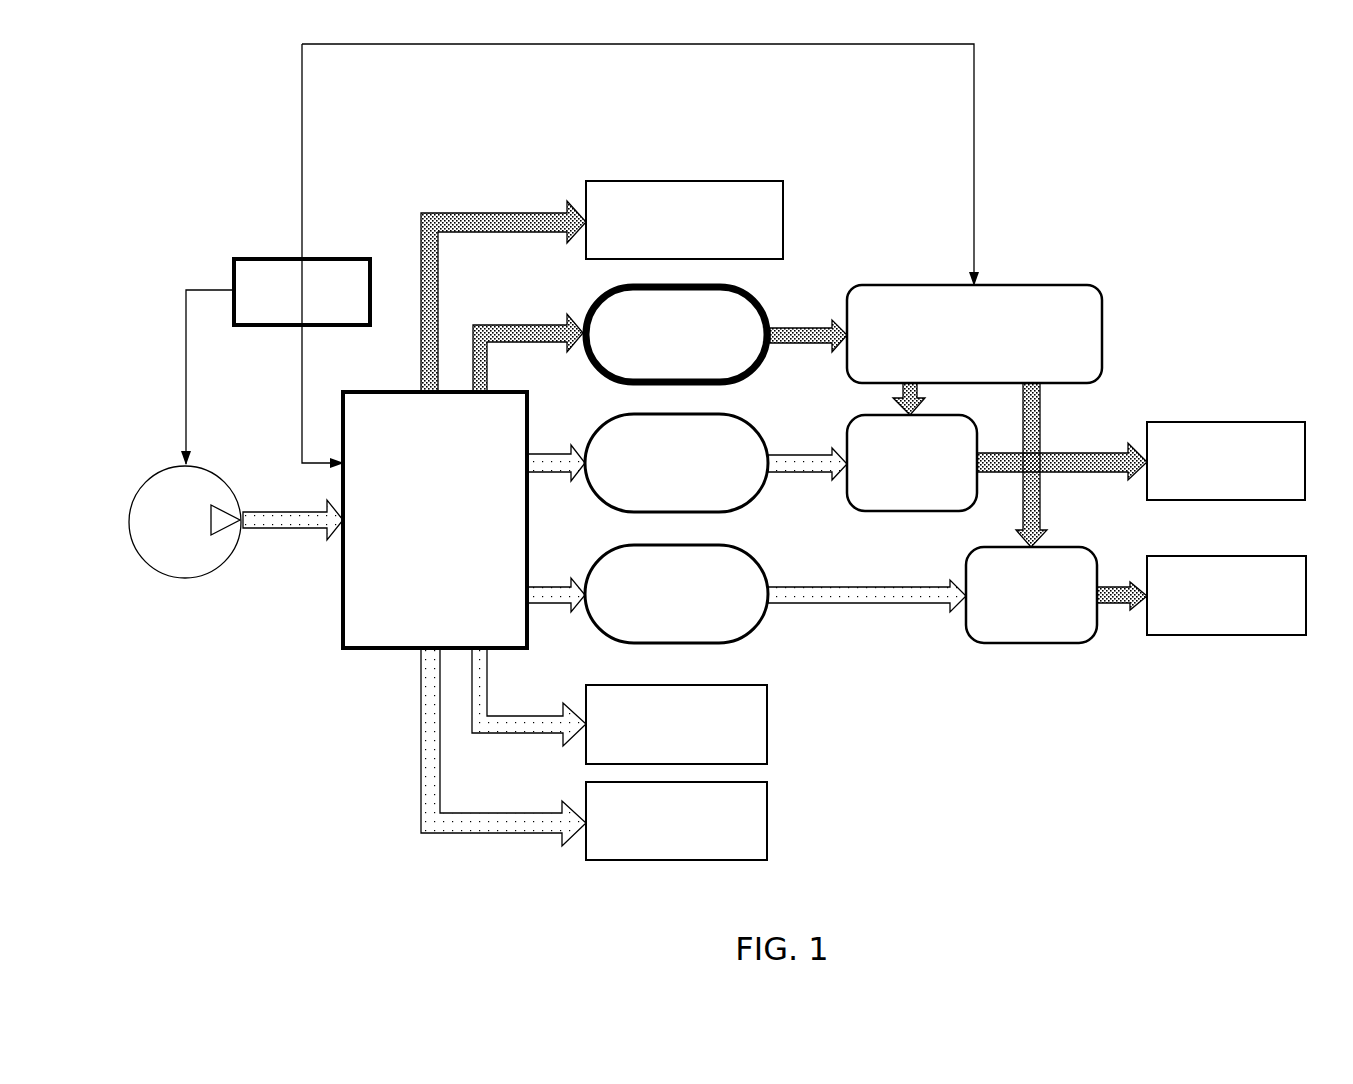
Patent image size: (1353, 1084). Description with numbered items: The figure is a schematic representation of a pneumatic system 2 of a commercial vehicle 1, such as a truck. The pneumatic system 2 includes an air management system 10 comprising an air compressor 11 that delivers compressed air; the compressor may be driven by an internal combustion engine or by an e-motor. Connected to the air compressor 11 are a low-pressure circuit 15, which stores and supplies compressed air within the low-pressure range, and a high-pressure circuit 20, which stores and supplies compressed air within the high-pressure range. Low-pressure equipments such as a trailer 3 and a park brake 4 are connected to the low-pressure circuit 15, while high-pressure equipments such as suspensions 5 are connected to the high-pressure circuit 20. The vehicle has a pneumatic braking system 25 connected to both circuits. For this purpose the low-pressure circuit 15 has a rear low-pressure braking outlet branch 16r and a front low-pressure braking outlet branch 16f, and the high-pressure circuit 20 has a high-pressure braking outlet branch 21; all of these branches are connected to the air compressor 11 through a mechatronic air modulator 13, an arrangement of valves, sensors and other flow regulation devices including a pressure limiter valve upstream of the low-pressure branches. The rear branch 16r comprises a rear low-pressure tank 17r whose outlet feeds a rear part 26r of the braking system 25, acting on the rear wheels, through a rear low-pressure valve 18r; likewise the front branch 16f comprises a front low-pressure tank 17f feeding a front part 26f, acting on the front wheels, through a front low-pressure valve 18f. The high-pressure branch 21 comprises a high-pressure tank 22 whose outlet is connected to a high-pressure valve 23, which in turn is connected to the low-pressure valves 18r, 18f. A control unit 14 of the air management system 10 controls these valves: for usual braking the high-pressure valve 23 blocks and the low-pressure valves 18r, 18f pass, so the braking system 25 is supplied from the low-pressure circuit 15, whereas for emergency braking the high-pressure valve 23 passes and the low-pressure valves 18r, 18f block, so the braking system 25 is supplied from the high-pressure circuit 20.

The commercial vehicle 1 is at (287, 808).
The pneumatic system 2 is at (1187, 192).
The trailer 3 is at (619, 706).
The park brake 4 is at (594, 754).
The suspensions 5 is at (602, 286).
The air management system 10 is at (235, 197).
The air compressor 11 is at (150, 475).
The mechatronic air modulator 13 is at (435, 520).
The control unit 14 is at (580, 254).
The low-pressure circuit 15 is at (925, 782).
The rear low-pressure braking outlet branch 16r is at (790, 505).
The front low-pressure braking outlet branch 16f is at (862, 622).
The rear low-pressure tank 17r is at (647, 463).
The front low-pressure tank 17f is at (647, 594).
The rear low-pressure valve 18r is at (912, 447).
The front low-pressure valve 18f is at (1031, 513).
The high-pressure circuit 20 is at (1013, 192).
The high-pressure braking outlet branch 21 is at (828, 242).
The high-pressure tank 22 is at (620, 339).
The high-pressure valve 23 is at (936, 334).
The braking system 25 is at (1240, 675).
The rear part of the braking system 26r is at (1141, 461).
The front part of the braking system 26f is at (1201, 595).